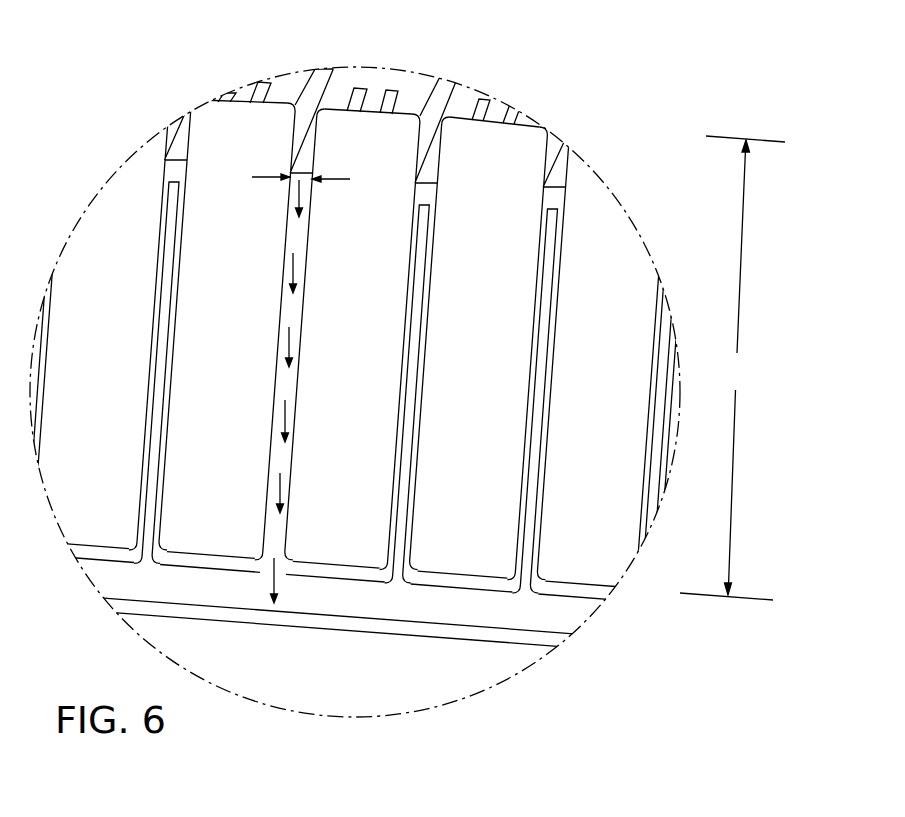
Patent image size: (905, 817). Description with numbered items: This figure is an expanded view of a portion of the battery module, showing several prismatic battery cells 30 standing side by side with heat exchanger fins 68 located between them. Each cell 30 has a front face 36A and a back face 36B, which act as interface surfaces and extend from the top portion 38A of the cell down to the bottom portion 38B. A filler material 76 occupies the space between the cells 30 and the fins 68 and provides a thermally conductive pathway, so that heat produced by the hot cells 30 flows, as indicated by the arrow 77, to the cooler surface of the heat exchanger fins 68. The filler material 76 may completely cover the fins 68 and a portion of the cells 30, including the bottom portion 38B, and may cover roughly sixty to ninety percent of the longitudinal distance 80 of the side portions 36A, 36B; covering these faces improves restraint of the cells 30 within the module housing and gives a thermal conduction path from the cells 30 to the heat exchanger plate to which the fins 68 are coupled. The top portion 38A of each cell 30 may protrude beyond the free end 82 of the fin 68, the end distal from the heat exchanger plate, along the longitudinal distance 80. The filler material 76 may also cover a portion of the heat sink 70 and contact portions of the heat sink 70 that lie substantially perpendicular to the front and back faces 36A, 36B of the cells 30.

The prismatic battery cell 30 is at (637, 612).
The front face 36A is at (167, 132).
The back face 36B is at (152, 351).
The top portion 38A is at (380, 88).
The bottom portion 38B is at (343, 570).
The heat exchanger fin 68 is at (415, 372).
The heat sink 70 is at (190, 560).
The filler material 76 is at (418, 192).
The arrow 77 is at (278, 503).
The longitudinal distance 80 is at (732, 368).
The free end 82 is at (318, 88).